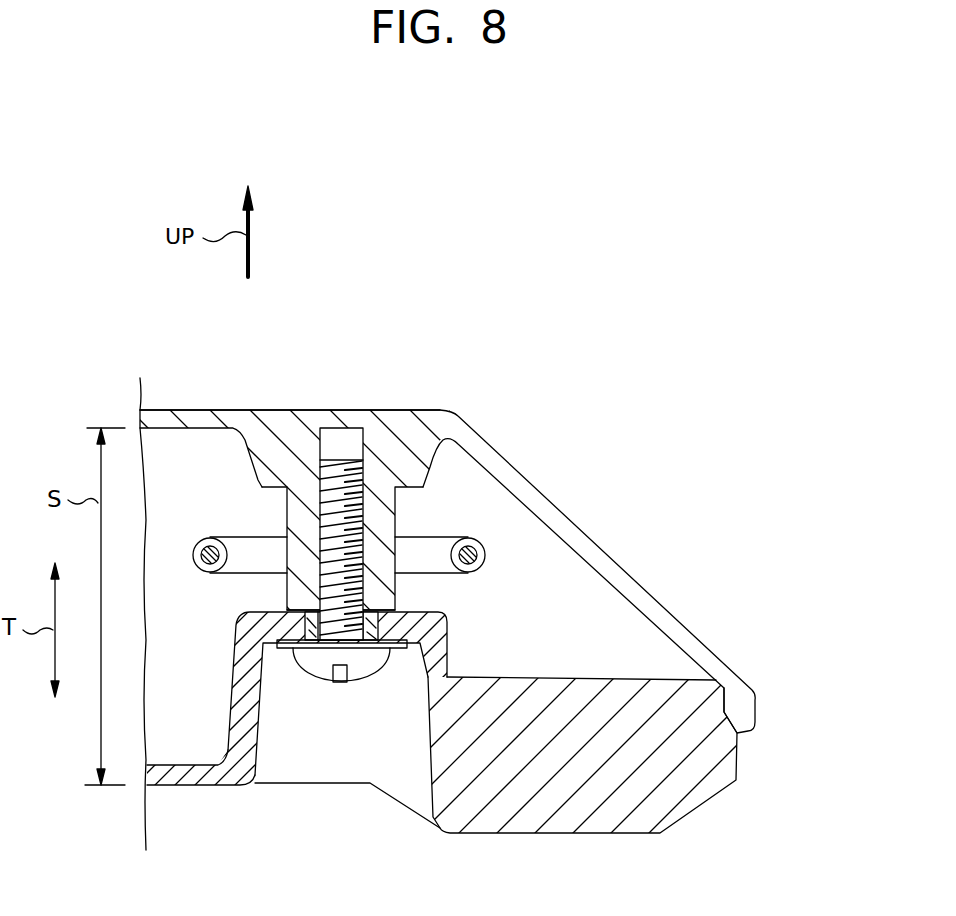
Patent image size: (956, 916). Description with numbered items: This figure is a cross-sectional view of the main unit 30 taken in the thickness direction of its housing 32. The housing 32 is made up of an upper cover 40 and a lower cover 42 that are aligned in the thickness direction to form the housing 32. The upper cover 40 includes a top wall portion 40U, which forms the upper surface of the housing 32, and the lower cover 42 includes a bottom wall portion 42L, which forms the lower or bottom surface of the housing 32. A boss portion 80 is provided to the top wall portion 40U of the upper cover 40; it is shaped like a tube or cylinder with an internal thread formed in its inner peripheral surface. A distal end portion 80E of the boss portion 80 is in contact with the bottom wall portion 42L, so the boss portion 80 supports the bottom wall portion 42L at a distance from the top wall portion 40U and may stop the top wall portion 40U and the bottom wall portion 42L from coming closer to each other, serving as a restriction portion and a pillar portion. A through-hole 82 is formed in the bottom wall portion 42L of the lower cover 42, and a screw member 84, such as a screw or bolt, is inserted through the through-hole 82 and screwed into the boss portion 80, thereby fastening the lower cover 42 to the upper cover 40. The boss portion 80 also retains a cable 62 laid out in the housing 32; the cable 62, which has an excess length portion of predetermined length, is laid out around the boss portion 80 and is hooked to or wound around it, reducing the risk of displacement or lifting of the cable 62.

The main unit 30 is at (655, 520).
The housing 32 is at (822, 645).
The upper cover 40 is at (715, 647).
The top wall portion 40U is at (200, 417).
The lower cover 42 is at (738, 782).
The bottom wall portion 42L is at (196, 785).
The cable 62 is at (438, 575).
The boss portion 80 is at (397, 507).
The distal end portion 80E is at (273, 587).
The through-hole 82 is at (380, 626).
The screw member 84 is at (365, 683).